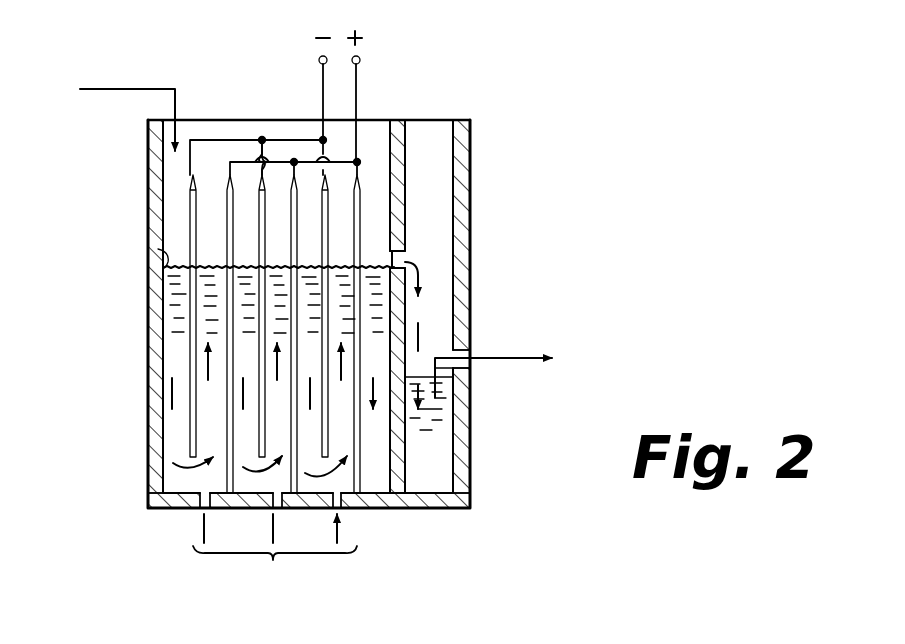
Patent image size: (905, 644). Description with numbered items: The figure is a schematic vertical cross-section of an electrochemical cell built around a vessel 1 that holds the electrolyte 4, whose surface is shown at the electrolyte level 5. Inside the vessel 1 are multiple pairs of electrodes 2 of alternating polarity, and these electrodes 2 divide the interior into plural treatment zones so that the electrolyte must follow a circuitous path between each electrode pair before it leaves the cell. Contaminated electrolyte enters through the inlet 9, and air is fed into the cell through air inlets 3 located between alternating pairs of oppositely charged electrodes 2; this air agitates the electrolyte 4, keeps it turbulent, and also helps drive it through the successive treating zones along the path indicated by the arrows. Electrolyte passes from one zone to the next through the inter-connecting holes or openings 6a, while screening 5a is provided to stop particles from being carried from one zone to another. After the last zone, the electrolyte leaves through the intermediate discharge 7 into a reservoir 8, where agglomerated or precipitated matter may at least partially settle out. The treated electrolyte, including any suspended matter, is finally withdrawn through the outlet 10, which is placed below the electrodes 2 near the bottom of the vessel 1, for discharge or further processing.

The vessel 1 is at (148, 176).
The electrodes 2 is at (265, 314).
The air inlets 3 is at (335, 540).
The electrolyte 4 is at (182, 424).
The electrolyte level 5 is at (158, 249).
The screening 5a is at (220, 288).
The inter-connecting holes or openings 6a is at (233, 262).
The intermediate discharge 7 is at (405, 258).
The reservoir 8 is at (443, 436).
The inlet 9 is at (167, 86).
The outlet 10 is at (478, 362).